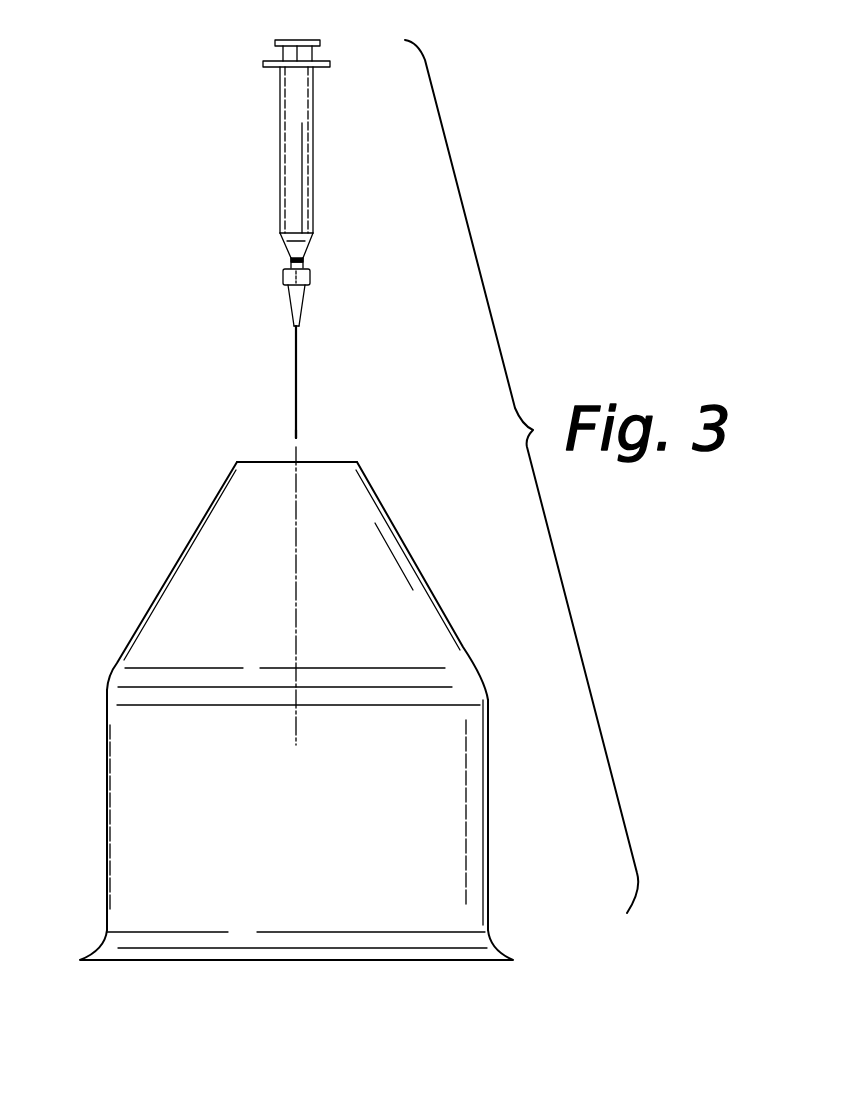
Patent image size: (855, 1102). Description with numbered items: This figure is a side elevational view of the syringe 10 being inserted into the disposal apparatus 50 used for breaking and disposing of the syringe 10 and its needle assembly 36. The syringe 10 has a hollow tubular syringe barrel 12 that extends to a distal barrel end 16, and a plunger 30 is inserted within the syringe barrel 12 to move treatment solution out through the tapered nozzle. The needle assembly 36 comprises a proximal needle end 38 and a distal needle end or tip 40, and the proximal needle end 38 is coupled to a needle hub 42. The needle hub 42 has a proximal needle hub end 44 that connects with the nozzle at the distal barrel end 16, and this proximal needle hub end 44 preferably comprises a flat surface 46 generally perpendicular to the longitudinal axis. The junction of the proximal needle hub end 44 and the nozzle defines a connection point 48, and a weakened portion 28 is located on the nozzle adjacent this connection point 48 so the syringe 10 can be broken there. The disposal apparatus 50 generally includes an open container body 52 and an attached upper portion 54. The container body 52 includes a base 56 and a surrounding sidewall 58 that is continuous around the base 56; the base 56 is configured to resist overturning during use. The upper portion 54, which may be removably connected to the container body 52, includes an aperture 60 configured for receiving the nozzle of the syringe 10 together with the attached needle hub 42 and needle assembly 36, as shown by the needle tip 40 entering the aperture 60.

The syringe 10 is at (345, 158).
The syringe barrel 12 is at (313, 108).
The distal barrel end 16 is at (280, 235).
The weakened portion 28 is at (290, 255).
The plunger 30 is at (282, 41).
The needle assembly 36 is at (330, 330).
The proximal needle end 38 is at (296, 330).
The distal needle end 40 is at (300, 436).
The needle hub 42 is at (310, 279).
The proximal needle hub end 44 is at (283, 270).
The flat surface 46 is at (307, 262).
The connection point 48 is at (289, 262).
The disposal apparatus 50 is at (461, 590).
The container body 52 is at (467, 743).
The upper portion 54 is at (350, 462).
The base 56 is at (500, 947).
The sidewall 58 is at (488, 805).
The aperture 60 is at (290, 460).